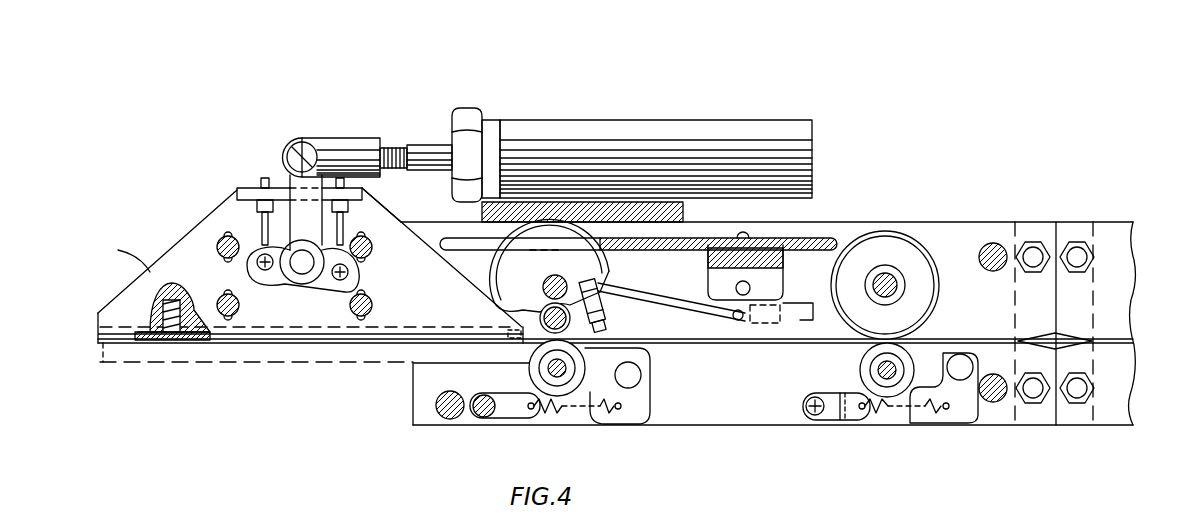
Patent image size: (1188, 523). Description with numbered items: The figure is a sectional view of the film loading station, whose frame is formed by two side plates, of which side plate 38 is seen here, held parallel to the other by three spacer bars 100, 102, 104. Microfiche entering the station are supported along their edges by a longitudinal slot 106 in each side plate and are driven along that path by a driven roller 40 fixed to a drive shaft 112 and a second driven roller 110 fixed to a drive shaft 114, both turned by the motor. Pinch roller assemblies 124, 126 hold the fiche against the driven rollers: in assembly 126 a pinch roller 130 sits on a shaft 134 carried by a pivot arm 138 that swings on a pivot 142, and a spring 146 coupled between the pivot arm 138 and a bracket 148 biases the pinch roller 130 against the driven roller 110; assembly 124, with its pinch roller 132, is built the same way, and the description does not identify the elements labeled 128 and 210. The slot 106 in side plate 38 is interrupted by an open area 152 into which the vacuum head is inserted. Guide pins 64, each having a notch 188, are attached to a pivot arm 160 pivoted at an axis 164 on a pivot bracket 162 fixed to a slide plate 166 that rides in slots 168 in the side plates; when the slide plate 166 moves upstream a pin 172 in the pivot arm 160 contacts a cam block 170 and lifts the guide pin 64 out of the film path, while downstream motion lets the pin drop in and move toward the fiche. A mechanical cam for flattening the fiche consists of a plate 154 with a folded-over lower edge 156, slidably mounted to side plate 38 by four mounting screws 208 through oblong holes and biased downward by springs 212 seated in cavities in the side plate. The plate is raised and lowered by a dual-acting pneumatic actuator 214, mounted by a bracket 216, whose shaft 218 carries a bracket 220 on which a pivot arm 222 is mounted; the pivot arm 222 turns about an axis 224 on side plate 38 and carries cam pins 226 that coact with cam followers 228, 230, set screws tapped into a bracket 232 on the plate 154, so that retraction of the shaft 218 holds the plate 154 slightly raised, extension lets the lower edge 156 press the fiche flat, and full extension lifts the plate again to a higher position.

The side plate 38 is at (962, 226).
The driven roller 40 is at (506, 293).
The guide pin 64 is at (622, 292).
The spacer bar 100 is at (995, 255).
The spacer bar 102 is at (997, 401).
The spacer bar 104 is at (452, 412).
The longitudinal slot 106 is at (664, 344).
The driven roller 110 is at (926, 283).
The drive shaft 112 is at (556, 284).
The drive shaft 114 is at (886, 276).
The pinch roller assembly 124 is at (600, 426).
The pinch roller assembly 126 is at (914, 441).
The roller 128 is at (550, 366).
The pinch roller 130 is at (862, 373).
The pinch roller 132 is at (520, 336).
The shaft 134 is at (880, 364).
The pivot arm 138 is at (966, 418).
The pivot 142 is at (958, 358).
The spring 146 is at (890, 411).
The bracket 148 is at (832, 420).
The open area 152 is at (222, 366).
The plate 154 is at (111, 251).
The folded over lower edge 156 is at (103, 362).
The pivot arm 160 is at (652, 312).
The pivot bracket 162 is at (782, 250).
The axis 164 is at (752, 287).
The slide plate 166 is at (702, 242).
The slot 168 is at (838, 243).
The cam block 170 is at (792, 304).
The pin 172 is at (738, 321).
The notch 188 is at (601, 323).
The mounting screw 208 is at (222, 244).
The bracket 210 is at (222, 240).
The spring 212 is at (174, 342).
The pneumatic actuator 214 is at (660, 120).
The bracket 216 is at (490, 122).
The shaft 218 is at (425, 150).
The bracket 220 is at (352, 146).
The pivot arm 222 is at (305, 142).
The axis 224 is at (302, 275).
The cam pin 226 is at (340, 282).
The cam follower 228 is at (268, 212).
The cam follower 230 is at (384, 208).
The bracket 232 is at (286, 175).